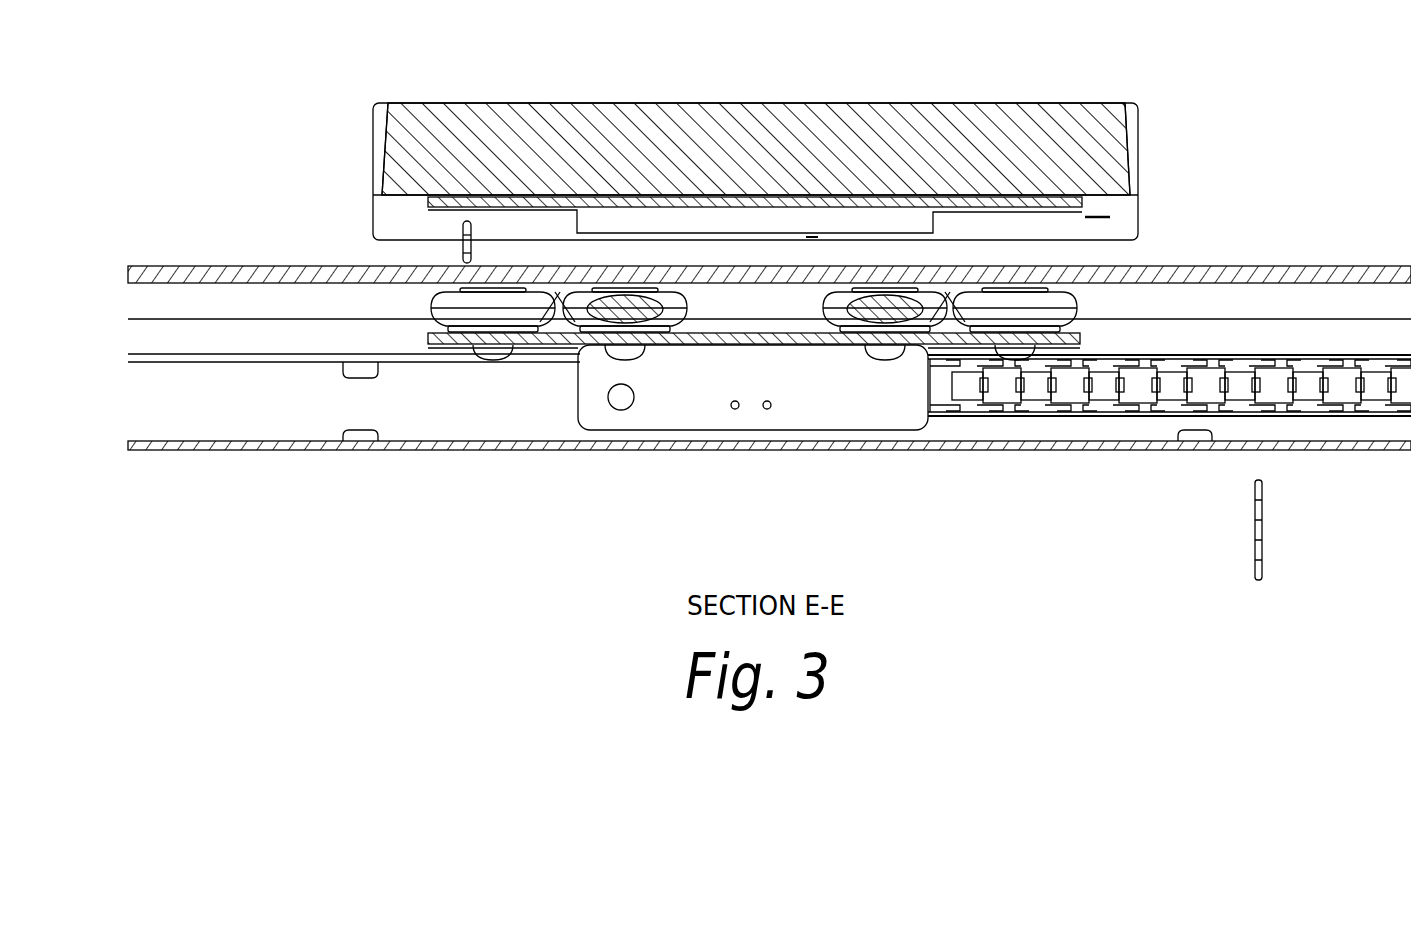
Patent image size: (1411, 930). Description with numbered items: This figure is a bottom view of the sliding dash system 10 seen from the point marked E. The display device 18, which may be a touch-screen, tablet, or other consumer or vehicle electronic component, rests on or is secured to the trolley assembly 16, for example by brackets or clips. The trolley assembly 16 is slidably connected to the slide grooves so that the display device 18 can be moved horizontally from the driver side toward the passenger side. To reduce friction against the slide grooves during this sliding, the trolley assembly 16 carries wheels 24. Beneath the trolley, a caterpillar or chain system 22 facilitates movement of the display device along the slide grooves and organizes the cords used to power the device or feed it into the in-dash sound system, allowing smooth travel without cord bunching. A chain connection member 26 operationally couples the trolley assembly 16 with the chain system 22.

The transport system 10 is at (1284, 80).
The trolley assembly 16 is at (1140, 162).
The display device 18 is at (990, 105).
The chain system 22 is at (1012, 412).
The wheels 24 is at (1068, 303).
The chain connection member 26 is at (670, 430).